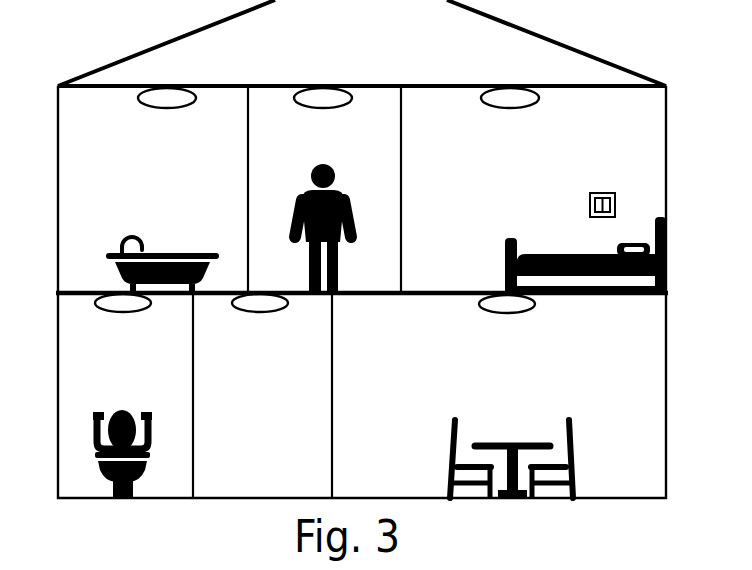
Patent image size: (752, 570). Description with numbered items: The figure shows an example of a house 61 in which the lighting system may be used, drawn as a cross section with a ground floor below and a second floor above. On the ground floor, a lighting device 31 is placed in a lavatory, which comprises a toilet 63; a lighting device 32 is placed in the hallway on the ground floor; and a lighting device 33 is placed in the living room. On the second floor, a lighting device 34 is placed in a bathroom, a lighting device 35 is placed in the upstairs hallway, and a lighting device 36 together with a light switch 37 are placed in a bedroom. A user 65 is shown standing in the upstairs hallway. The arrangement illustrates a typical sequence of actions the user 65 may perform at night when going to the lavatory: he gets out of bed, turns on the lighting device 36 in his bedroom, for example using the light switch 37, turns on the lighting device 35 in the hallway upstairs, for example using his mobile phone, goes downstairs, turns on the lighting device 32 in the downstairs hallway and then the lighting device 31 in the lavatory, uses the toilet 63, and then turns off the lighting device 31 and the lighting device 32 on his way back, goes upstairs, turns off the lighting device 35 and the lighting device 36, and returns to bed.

The lighting device 31 is at (120, 311).
The lighting device 32 is at (257, 311).
The lighting device 33 is at (504, 312).
The lighting device 34 is at (163, 107).
The lighting device 35 is at (319, 107).
The lighting device 36 is at (506, 107).
The light switch 37 is at (607, 194).
The house 61 is at (666, 152).
The toilet 63 is at (96, 412).
The user 65 is at (348, 207).